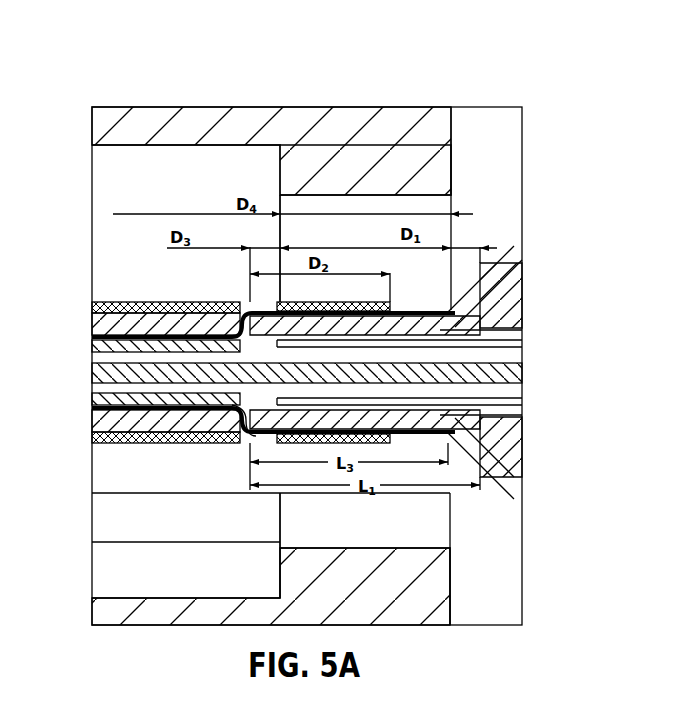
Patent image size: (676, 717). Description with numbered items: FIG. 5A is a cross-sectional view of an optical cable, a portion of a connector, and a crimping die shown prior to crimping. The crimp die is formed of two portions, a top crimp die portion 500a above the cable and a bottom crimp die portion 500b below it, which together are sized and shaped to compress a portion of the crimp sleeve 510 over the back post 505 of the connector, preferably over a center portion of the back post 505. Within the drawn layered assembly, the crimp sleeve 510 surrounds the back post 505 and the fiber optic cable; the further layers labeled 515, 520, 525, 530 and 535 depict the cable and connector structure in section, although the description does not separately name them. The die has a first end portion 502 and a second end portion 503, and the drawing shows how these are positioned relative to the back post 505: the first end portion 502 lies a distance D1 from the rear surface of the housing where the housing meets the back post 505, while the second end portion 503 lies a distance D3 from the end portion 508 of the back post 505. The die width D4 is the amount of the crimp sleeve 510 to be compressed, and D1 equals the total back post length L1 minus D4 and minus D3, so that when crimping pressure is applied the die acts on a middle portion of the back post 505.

The first end portion 502 is at (461, 139).
The second end portion 503 is at (262, 161).
The top crimp die portion 500a is at (445, 176).
The bottom crimp die portion 500b is at (437, 572).
The back post 505 is at (522, 462).
The end portion 508 is at (237, 440).
The crimp sleeve 510 is at (110, 303).
The hatched dielectric layer 515 is at (98, 328).
The upper bend region 520 is at (440, 296).
The center layer 525 is at (97, 377).
The lower top layer 530 is at (97, 400).
The lower bend region 535 is at (513, 400).